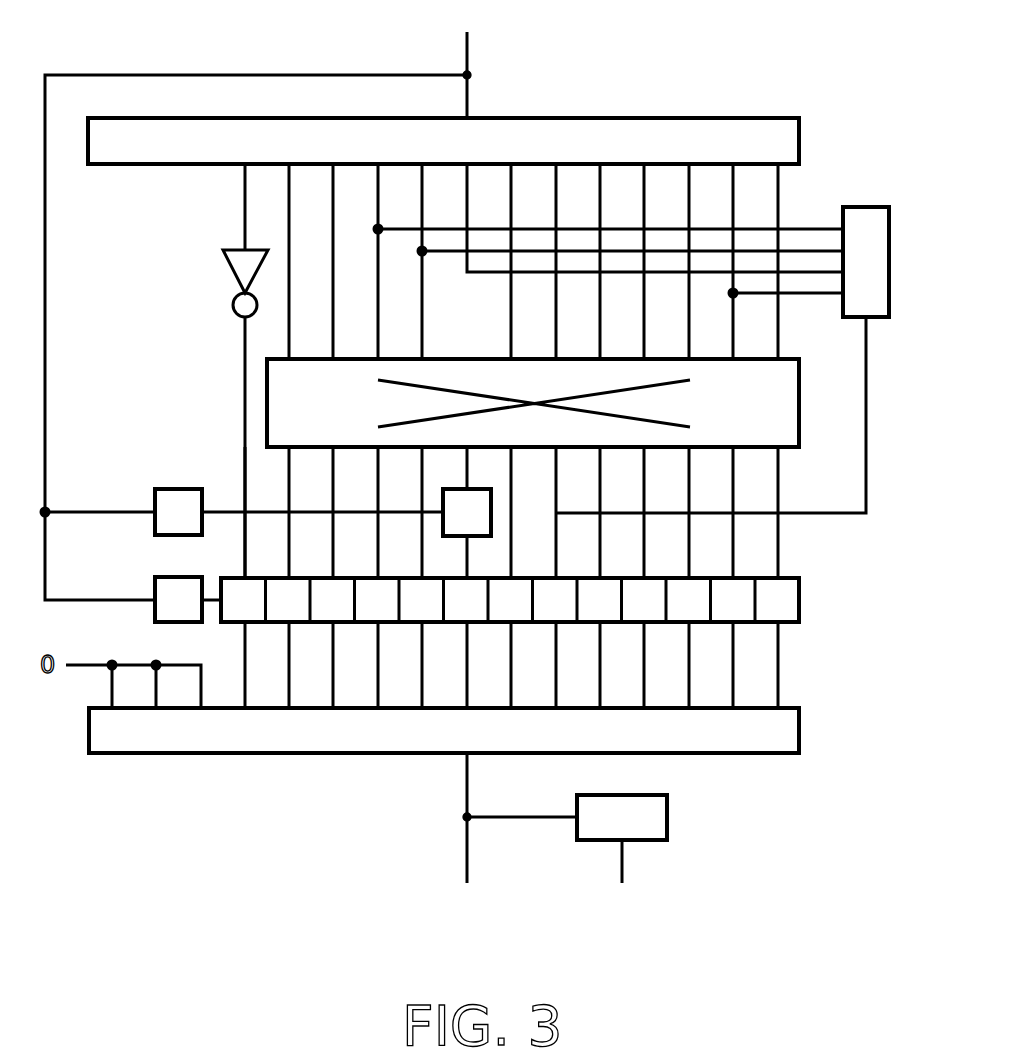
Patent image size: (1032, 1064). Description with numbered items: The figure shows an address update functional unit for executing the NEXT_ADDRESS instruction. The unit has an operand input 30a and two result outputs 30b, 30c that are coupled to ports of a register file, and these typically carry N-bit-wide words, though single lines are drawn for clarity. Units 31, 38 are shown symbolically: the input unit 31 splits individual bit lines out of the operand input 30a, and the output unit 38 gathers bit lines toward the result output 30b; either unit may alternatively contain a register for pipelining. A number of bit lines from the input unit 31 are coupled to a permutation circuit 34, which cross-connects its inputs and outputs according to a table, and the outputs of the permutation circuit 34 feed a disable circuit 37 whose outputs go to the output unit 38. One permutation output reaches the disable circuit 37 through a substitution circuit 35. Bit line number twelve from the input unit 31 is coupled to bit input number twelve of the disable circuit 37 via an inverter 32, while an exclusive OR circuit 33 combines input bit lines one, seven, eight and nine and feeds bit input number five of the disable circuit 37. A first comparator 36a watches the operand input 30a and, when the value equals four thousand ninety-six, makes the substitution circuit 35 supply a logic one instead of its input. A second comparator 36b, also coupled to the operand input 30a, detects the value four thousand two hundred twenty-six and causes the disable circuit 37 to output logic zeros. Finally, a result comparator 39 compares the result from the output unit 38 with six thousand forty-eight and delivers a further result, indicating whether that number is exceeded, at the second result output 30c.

The operand input 30a is at (469, 72).
The input unit 31 is at (745, 118).
The inverter 32 is at (230, 271).
The exclusive OR circuit 33 is at (863, 207).
The permutation circuit 34 is at (800, 403).
The substitution circuit 35 is at (491, 502).
The first comparator 36a is at (155, 497).
The second comparator 36b is at (155, 586).
The disable circuit 37 is at (800, 600).
The output unit 38 is at (800, 728).
The result comparator 39 is at (667, 820).
The result output 30b is at (467, 865).
The result output 30c is at (622, 867).